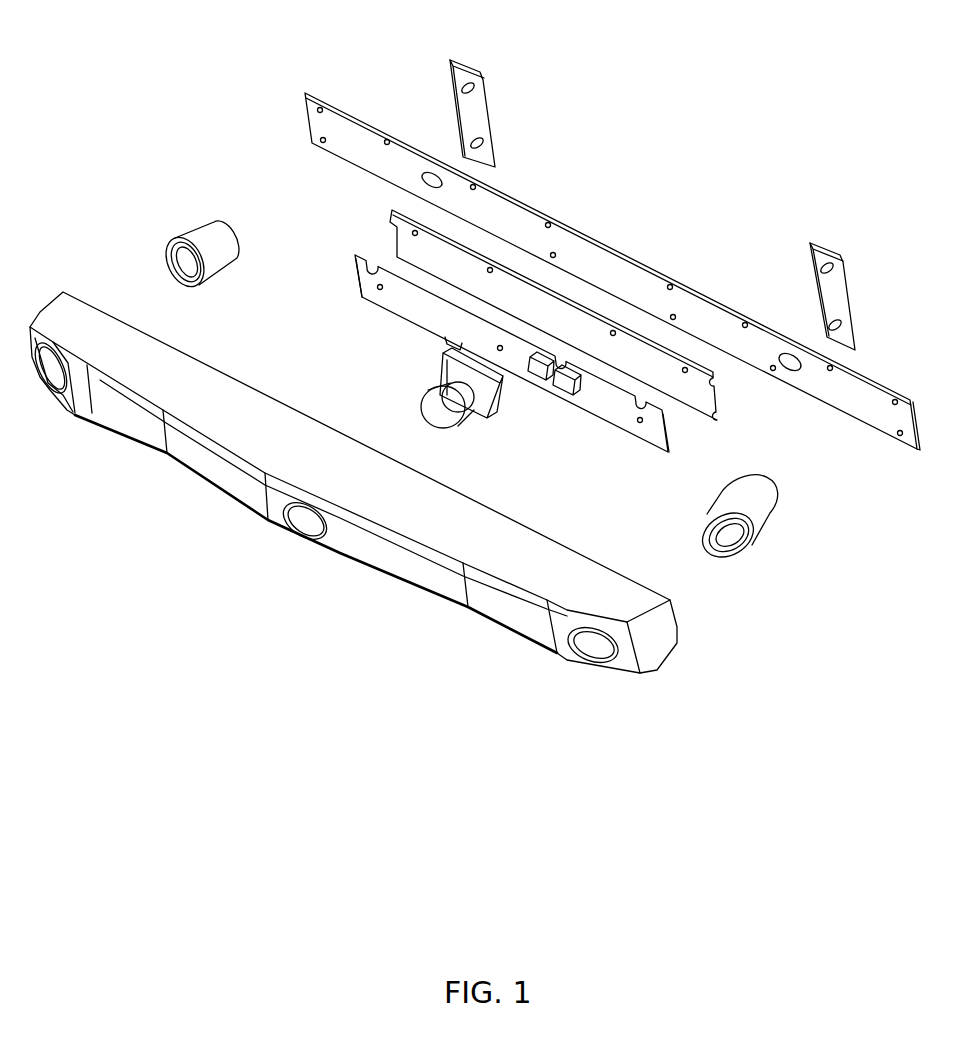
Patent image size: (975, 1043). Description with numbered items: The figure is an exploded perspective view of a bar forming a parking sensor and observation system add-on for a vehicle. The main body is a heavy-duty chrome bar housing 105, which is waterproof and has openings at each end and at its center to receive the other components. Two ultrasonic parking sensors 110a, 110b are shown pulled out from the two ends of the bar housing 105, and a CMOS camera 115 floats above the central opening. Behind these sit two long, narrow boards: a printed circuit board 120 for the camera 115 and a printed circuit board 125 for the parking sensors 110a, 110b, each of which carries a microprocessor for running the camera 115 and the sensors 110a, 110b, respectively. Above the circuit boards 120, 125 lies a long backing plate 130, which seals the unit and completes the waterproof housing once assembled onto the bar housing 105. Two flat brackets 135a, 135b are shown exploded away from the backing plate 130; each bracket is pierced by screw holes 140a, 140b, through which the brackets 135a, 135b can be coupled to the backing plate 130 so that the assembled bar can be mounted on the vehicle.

The bar housing 105 is at (497, 602).
The ultrasonic parking sensor 110a is at (205, 233).
The ultrasonic parking sensor 110b is at (748, 515).
The CMOS camera 115 is at (432, 407).
The printed circuit board 120 is at (367, 287).
The printed circuit board 125 is at (402, 233).
The backing plate 130 is at (313, 125).
The flat bracket 135a is at (489, 94).
The flat bracket 135b is at (839, 272).
The screw holes 140a is at (482, 145).
The screw holes 140b is at (835, 318).